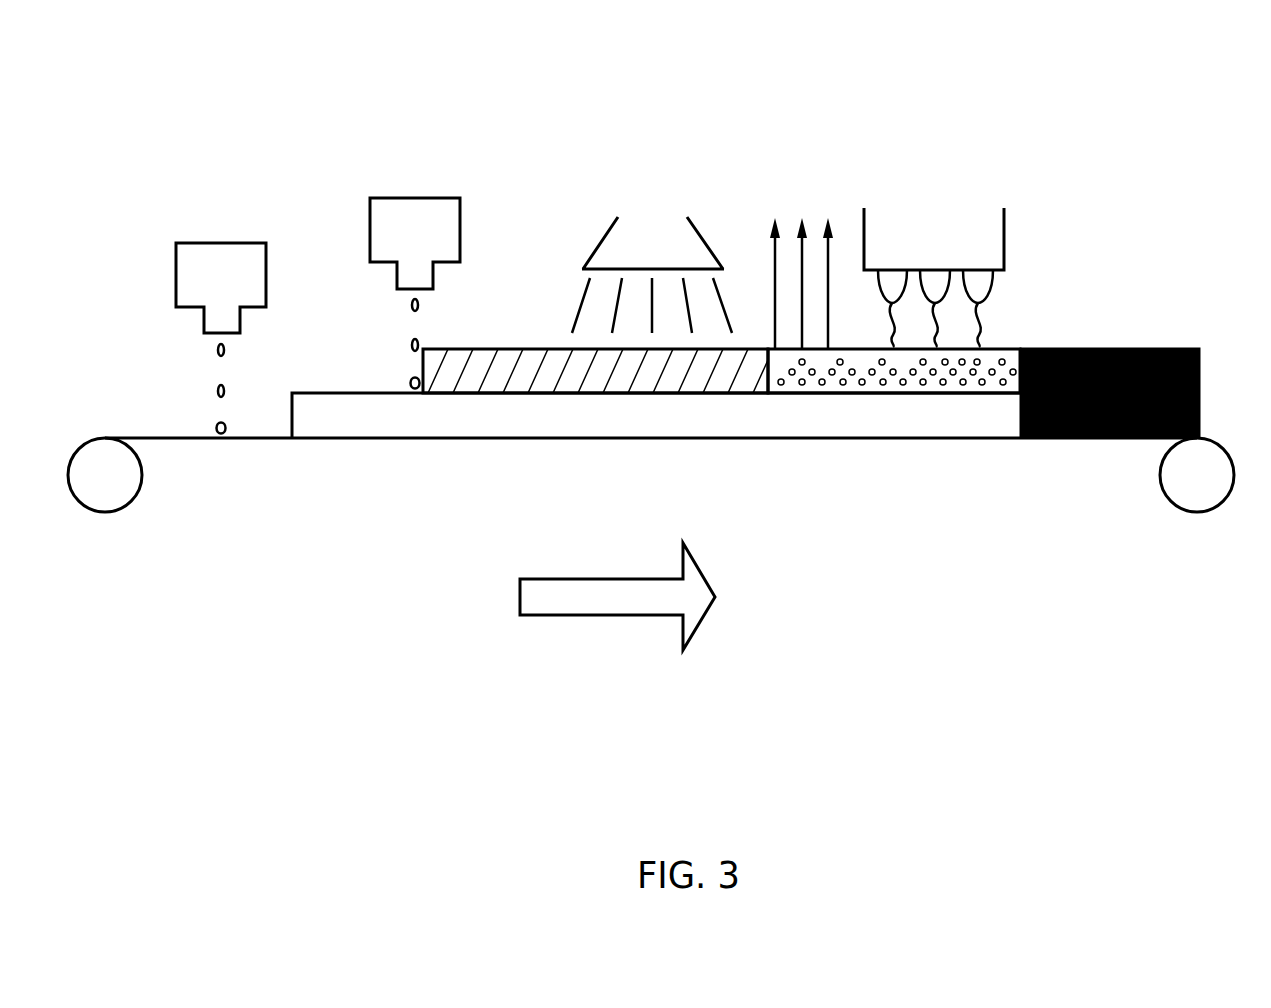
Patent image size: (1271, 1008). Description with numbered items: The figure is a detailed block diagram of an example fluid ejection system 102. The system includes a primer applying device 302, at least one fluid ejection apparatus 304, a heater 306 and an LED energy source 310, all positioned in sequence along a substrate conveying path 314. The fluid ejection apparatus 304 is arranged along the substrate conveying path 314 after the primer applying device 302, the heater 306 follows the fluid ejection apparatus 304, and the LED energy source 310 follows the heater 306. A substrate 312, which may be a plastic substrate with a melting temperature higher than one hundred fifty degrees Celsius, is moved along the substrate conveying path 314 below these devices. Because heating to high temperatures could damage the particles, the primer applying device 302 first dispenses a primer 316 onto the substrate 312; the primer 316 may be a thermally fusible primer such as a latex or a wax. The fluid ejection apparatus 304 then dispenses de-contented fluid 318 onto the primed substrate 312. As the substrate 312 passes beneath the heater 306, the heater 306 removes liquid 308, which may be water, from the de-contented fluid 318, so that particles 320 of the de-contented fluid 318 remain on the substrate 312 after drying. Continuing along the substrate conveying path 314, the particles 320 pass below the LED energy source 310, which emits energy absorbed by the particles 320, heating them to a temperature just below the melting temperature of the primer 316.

The fluid ejection system 102 is at (220, 120).
The primer applying device 302 is at (237, 288).
The fluid ejection apparatus 304 is at (431, 243).
The heater 306 is at (667, 259).
The liquid 308 is at (802, 255).
The LED energy source 310 is at (950, 249).
The substrate 312 is at (255, 438).
The substrate conveying path 314 is at (617, 596).
The primer 316 is at (215, 348).
The de-contented fluid 318 is at (410, 303).
The particles 320 is at (838, 348).